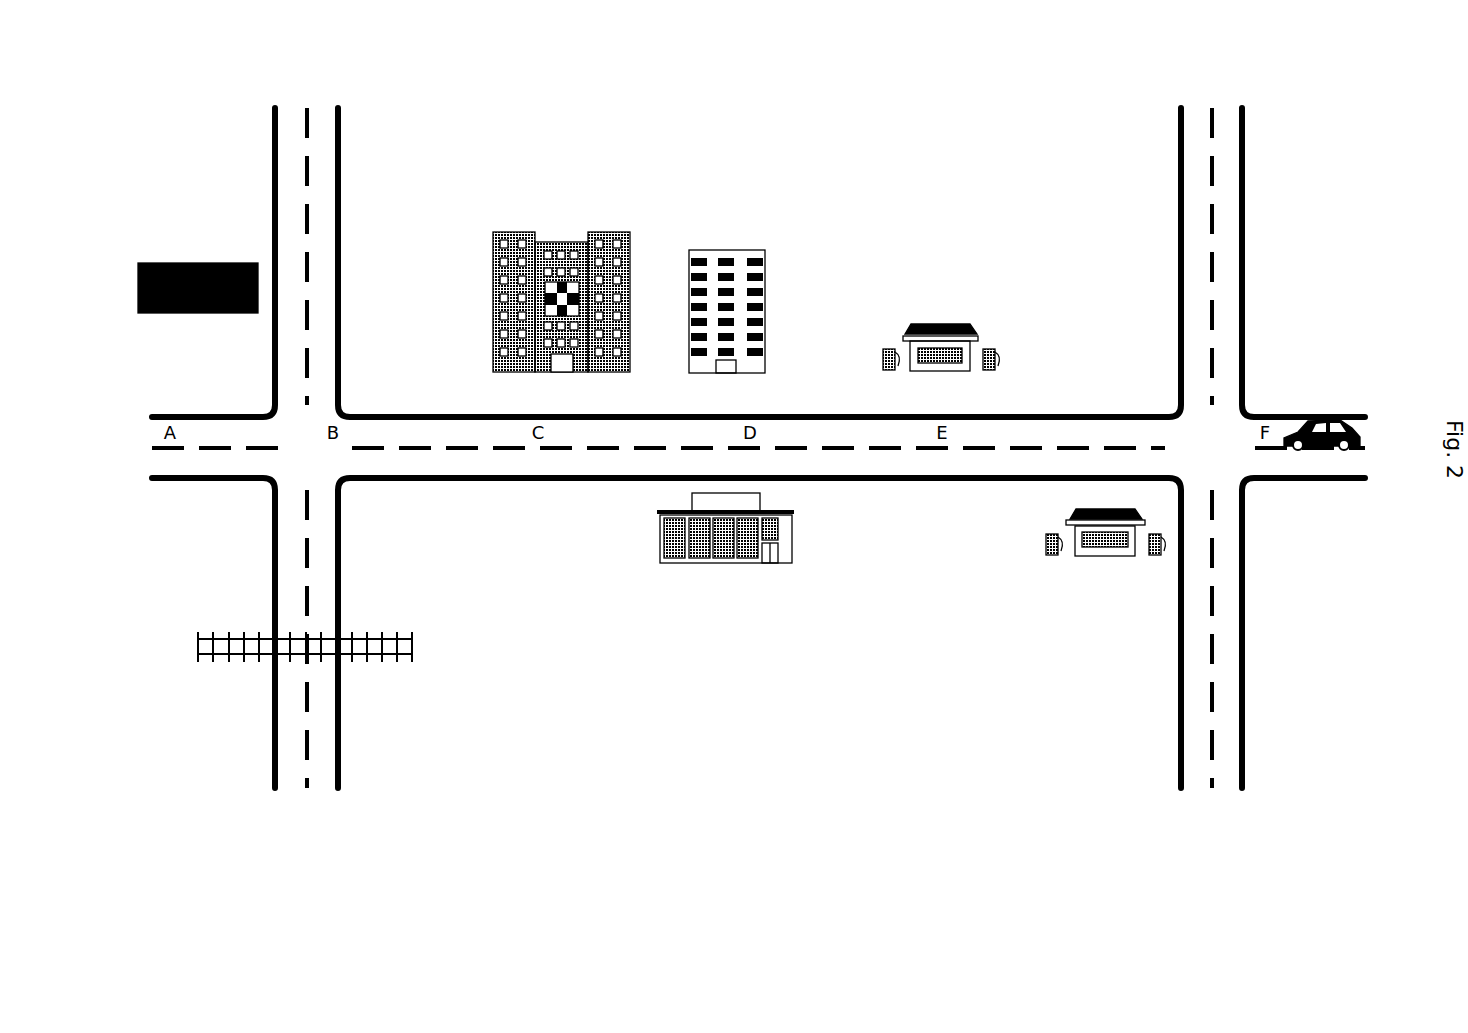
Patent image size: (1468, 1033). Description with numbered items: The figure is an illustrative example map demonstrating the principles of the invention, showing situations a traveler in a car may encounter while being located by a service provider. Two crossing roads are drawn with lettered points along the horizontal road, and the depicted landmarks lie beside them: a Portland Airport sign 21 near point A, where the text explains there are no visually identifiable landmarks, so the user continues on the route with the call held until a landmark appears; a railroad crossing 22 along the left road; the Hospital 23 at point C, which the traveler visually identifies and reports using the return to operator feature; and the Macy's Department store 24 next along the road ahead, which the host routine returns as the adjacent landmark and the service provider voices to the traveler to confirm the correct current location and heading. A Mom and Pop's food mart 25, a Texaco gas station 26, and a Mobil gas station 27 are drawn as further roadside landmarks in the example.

The Portland Airport origin location sign 21 is at (198, 275).
The railroad crossing 22 is at (305, 631).
The Hospital 23 is at (561, 302).
The Macy's Department store 24 is at (728, 310).
The Mom & Pop's food mart convenience store 25 is at (736, 537).
The Texaco gas station 26 is at (941, 345).
The Mobil gas station 27 is at (1105, 532).